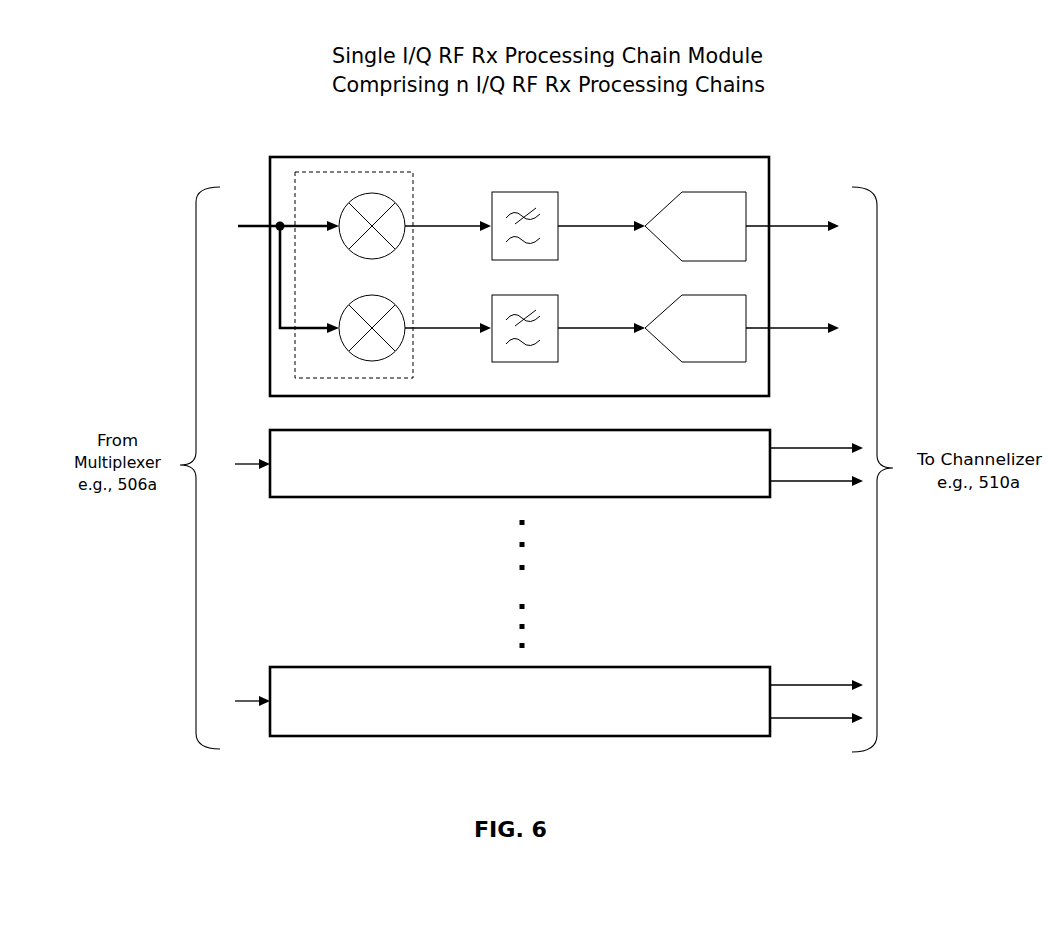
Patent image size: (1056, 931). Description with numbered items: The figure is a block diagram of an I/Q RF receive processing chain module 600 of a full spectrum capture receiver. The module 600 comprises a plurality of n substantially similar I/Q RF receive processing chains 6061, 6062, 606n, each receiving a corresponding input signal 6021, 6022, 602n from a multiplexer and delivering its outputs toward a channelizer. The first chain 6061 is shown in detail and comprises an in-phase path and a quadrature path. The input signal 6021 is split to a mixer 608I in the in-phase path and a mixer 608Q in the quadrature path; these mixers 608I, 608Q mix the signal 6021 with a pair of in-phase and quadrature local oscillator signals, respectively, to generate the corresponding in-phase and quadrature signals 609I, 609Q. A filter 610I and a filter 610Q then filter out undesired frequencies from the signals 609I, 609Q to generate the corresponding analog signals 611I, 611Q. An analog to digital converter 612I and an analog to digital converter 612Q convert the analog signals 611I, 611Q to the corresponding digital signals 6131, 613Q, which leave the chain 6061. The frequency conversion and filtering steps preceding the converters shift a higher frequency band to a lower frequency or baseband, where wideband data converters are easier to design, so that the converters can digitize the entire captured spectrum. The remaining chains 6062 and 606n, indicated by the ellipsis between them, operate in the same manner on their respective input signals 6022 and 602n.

The I/Q RF receive processing chain module 600 is at (855, 97).
The signal 6021 is at (278, 277).
The signal 6022 is at (243, 452).
The signal 602n is at (243, 690).
The I/Q RF receive processing chain 6061 is at (432, 157).
The I/Q RF receive processing chain 6062 is at (461, 429).
The I/Q RF receive processing chain 606n is at (461, 667).
The mixer 608I is at (346, 214).
The mixer 608Q is at (346, 316).
The in-phase signal 609I is at (458, 230).
The quadrature signal 609Q is at (458, 332).
The filter 610I is at (490, 212).
The filter 610Q is at (490, 314).
The analog signal 611I is at (619, 229).
The analog signal 611Q is at (619, 331).
The analog to digital converter (ADC) 612I is at (664, 210).
The analog to digital converter (ADC) 612Q is at (664, 313).
The digital signal 6131 is at (814, 228).
The digital signal 613Q is at (814, 330).